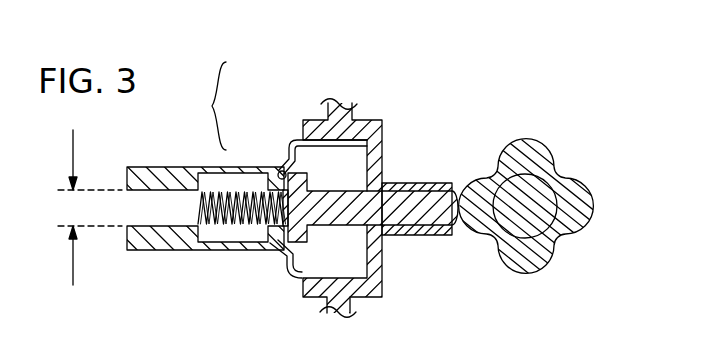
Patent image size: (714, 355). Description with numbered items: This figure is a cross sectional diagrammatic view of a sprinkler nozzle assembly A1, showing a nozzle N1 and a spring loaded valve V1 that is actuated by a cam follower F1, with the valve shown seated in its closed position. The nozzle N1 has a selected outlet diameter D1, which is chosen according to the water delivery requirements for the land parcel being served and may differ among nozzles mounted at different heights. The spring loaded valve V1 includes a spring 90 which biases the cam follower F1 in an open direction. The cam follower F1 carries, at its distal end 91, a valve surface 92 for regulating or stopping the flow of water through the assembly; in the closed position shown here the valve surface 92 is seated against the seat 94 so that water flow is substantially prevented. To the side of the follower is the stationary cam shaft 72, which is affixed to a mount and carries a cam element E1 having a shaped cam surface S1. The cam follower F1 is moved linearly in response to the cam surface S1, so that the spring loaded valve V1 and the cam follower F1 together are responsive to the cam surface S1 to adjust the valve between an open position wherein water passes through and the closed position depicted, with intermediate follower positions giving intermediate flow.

The nozzle N1 is at (152, 252).
The outlet diameter D1 is at (90, 207).
The spring 90 is at (243, 186).
The distal end 91 is at (267, 240).
The valve surface 92 is at (280, 170).
The seat 94 is at (281, 168).
The spring loaded valve V1 is at (205, 106).
The cam follower F1 is at (378, 171).
The sprinkler nozzle assembly A1 is at (422, 110).
The cam element E1 is at (588, 206).
The cam surface S1 is at (568, 237).
The cam shaft 72 is at (530, 183).